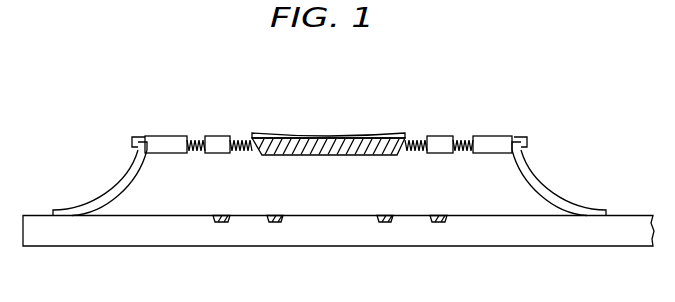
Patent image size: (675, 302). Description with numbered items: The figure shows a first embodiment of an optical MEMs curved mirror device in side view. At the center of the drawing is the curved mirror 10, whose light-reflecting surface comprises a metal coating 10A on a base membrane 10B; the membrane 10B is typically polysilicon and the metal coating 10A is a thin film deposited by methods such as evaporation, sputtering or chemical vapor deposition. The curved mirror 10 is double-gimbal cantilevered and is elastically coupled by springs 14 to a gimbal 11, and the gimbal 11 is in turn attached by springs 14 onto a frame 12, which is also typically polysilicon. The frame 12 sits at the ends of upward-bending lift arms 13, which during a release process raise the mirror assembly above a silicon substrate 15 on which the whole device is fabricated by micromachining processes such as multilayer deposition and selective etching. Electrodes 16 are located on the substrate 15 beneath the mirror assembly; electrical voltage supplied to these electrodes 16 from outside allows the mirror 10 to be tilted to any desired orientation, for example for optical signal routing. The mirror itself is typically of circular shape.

The curved mirror 10 is at (330, 120).
The metal coating 10A is at (280, 135).
The base membrane 10B is at (328, 148).
The gimbal 11 is at (440, 136).
The frame 12 is at (498, 136).
The lift arms 13 is at (110, 192).
The springs 14 is at (196, 138).
The silicon substrate 15 is at (541, 232).
The electrodes 16 is at (222, 223).